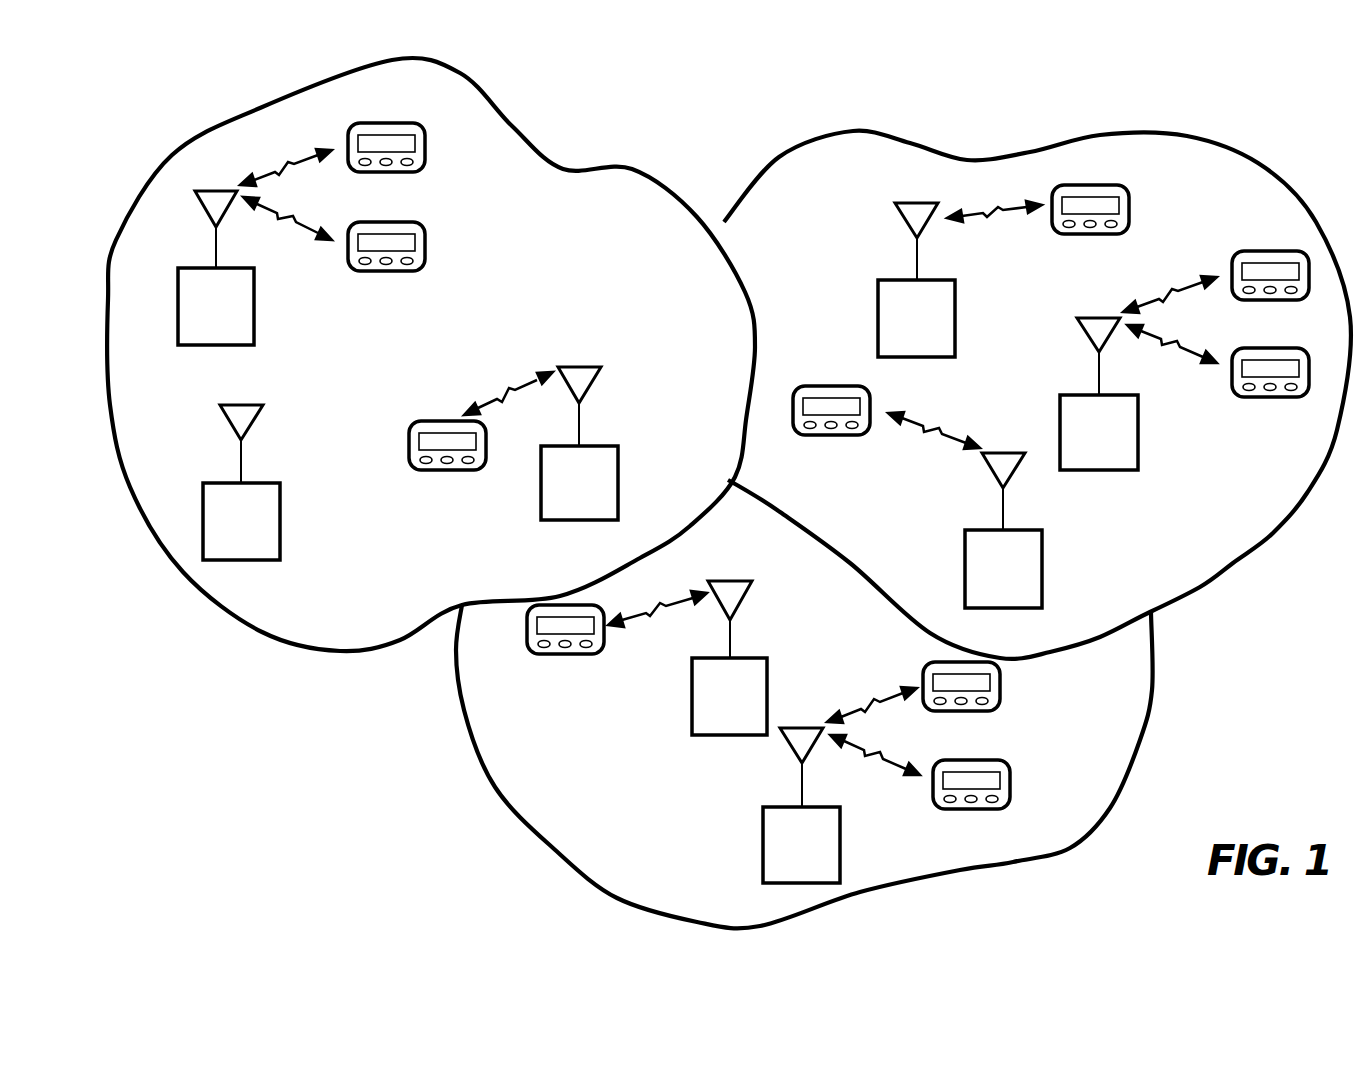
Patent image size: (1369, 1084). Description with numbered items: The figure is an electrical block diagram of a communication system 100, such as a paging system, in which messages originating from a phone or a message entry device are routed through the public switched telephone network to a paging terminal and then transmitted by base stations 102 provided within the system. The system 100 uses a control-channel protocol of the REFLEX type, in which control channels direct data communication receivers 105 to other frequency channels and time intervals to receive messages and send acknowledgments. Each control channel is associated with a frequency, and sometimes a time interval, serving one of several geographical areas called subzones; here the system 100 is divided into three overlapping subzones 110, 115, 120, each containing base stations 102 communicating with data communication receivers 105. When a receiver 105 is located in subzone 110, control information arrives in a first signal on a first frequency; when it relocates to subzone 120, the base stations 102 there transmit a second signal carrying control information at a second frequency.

The communication system 100 is at (729, 493).
The base station 102 is at (254, 302).
The data communication receiver 105 is at (425, 143).
The subzone 110 is at (599, 164).
The subzone 115 is at (893, 133).
The subzone 120 is at (548, 853).